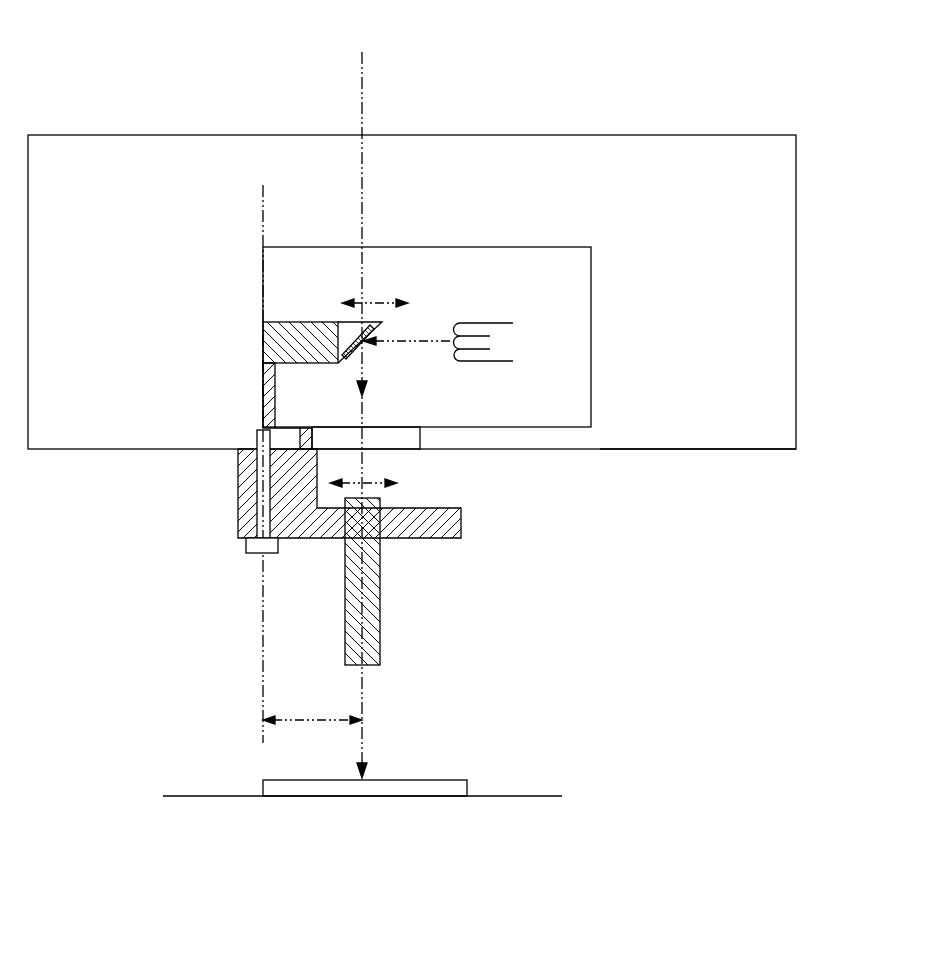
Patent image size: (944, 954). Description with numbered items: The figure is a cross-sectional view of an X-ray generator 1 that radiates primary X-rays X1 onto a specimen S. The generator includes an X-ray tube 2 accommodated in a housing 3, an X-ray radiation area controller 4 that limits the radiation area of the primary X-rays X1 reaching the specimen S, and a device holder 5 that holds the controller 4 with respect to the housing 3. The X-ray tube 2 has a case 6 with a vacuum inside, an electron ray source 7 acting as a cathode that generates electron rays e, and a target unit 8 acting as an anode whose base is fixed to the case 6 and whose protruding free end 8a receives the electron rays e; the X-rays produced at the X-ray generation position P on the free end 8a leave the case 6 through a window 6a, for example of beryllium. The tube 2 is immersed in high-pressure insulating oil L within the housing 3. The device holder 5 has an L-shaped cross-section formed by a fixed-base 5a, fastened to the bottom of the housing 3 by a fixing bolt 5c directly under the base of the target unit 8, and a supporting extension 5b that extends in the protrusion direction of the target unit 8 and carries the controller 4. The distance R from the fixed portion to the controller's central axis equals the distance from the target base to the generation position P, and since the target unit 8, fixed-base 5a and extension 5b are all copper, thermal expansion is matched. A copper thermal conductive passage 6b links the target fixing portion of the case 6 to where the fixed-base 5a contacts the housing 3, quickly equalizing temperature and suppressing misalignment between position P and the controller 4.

The X-ray generator 1 is at (682, 92).
The X-ray tube 2 is at (558, 240).
The housing 3 is at (740, 134).
The X-ray radiation area controller 4 is at (380, 586).
The device holder 5 is at (343, 528).
The fixed-base 5a is at (238, 478).
The supporting extension 5b is at (462, 522).
The fixing bolt 5c is at (258, 553).
The case 6 is at (591, 317).
The window 6a is at (400, 427).
The thermal conductive passage 6b is at (263, 393).
The electron ray source 7 is at (490, 323).
The target unit 8 is at (283, 322).
The free end 8a is at (352, 360).
The electron rays e is at (402, 340).
The X-ray generation position P is at (370, 347).
The distance R is at (312, 720).
The primary X-rays X1 is at (364, 728).
The specimen S is at (450, 780).
The high-pressure insulating oil L is at (673, 420).